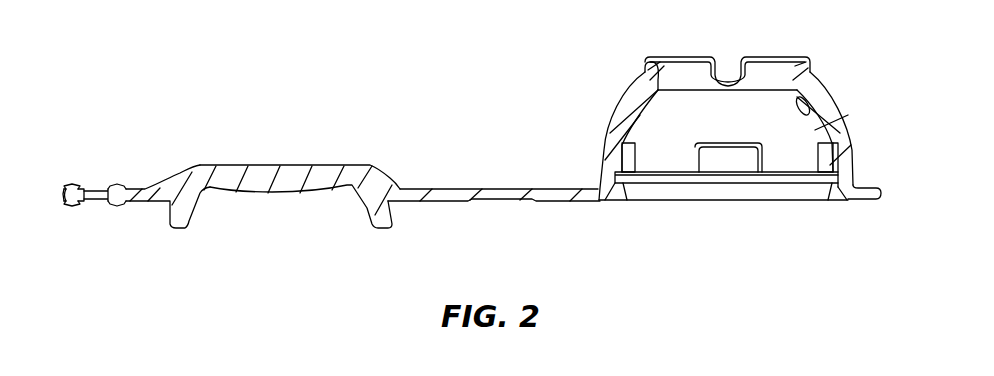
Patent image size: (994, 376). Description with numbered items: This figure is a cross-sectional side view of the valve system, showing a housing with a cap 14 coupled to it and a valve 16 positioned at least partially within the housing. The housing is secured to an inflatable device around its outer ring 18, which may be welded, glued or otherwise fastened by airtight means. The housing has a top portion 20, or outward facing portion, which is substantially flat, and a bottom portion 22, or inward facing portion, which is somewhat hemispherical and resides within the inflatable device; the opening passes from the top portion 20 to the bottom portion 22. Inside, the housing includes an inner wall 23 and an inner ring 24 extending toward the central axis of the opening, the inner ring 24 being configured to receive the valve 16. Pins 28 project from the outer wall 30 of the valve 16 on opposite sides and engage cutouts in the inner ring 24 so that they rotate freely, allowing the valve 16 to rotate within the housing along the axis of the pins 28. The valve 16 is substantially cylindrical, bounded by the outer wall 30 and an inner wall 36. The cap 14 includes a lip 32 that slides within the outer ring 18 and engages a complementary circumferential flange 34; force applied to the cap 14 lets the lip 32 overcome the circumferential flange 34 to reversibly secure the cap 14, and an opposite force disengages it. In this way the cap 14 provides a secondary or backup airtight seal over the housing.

The cap 14 is at (136, 196).
The valve 16 is at (805, 140).
The outer ring 18 is at (851, 186).
The top portion 20 is at (848, 201).
The bottom portion 22 is at (770, 57).
The inner wall 23 is at (836, 163).
The inner ring 24 is at (603, 138).
The pin 28 is at (632, 168).
The outer wall 30 is at (636, 98).
The lip 32 is at (392, 222).
The circumferential flange 34 is at (614, 186).
The inner wall 36 is at (812, 103).